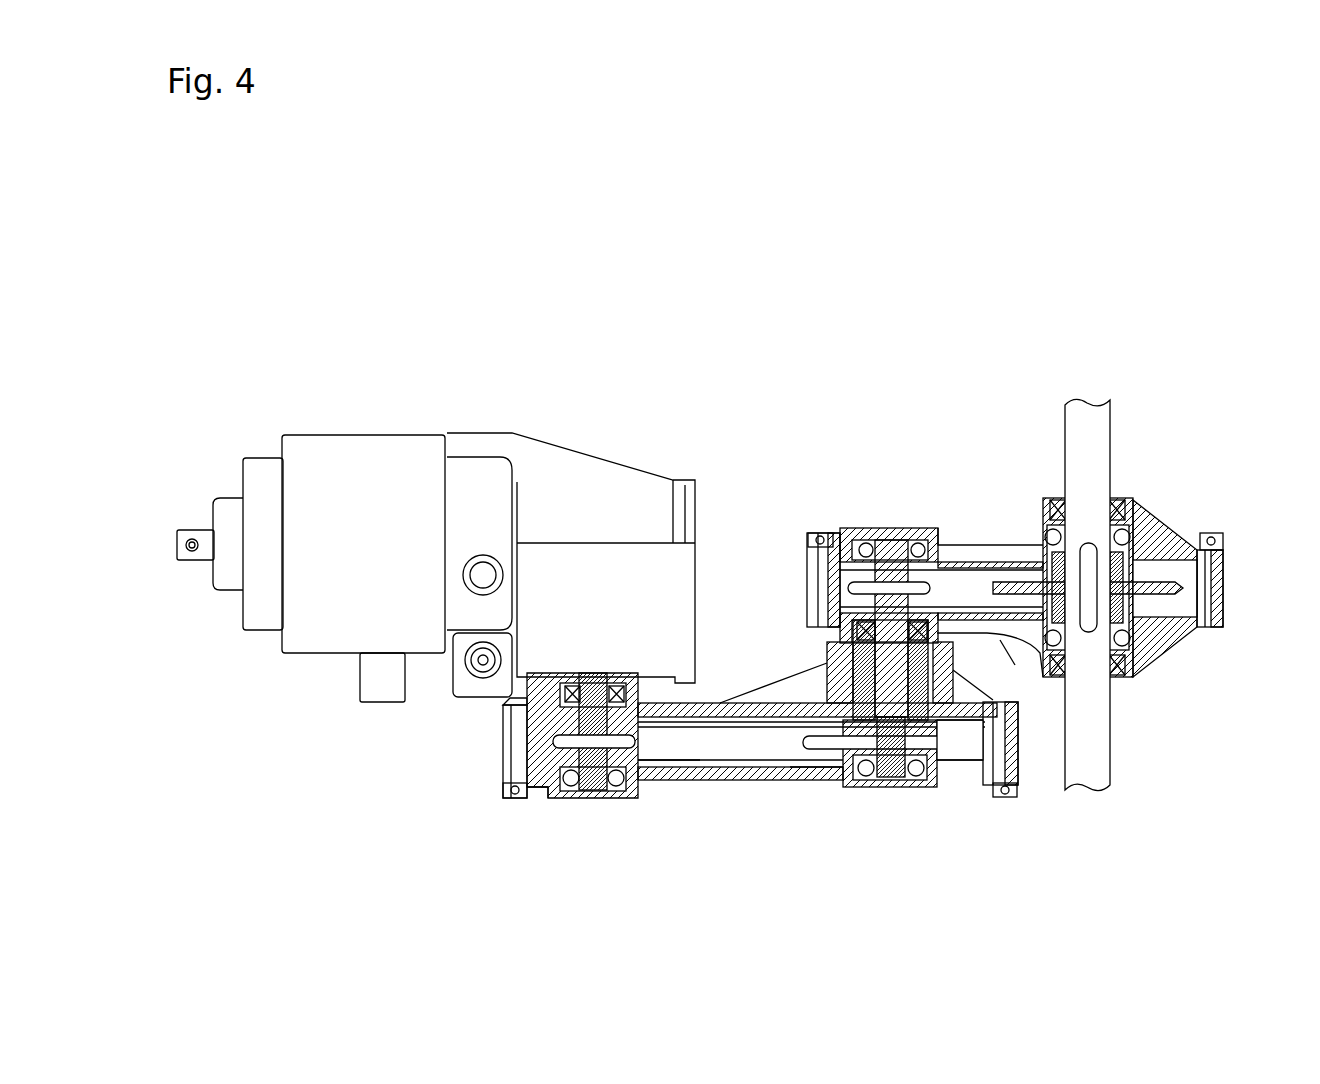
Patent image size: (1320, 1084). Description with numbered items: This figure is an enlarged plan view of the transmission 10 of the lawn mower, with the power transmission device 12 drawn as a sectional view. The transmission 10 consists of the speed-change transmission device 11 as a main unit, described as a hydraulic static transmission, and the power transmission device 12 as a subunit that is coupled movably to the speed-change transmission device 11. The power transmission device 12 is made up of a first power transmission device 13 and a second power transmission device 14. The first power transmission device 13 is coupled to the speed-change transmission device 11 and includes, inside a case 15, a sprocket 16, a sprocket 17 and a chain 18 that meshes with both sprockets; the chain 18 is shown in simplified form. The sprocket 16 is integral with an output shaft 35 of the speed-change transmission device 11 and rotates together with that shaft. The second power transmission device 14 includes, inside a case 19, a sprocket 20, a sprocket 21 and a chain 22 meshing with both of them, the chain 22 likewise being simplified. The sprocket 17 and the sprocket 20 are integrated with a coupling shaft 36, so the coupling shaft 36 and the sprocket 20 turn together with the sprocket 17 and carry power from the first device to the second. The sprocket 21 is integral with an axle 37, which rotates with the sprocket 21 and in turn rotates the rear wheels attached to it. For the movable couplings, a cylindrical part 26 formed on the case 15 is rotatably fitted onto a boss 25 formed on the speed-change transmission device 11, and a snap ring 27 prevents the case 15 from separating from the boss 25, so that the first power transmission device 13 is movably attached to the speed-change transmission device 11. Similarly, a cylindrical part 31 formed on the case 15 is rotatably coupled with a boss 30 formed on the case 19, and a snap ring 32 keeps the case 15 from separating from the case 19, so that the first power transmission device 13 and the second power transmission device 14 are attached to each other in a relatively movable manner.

The transmission 10 is at (794, 396).
The speed-change transmission device 11 is at (365, 435).
The power transmission device 12 is at (905, 322).
The first power transmission device 13 is at (734, 648).
The second power transmission device 14 is at (986, 496).
The case 15 is at (722, 775).
The sprocket 16 is at (558, 797).
The sprocket 17 is at (813, 778).
The chain 18 is at (665, 762).
The case 19 is at (1003, 548).
The sprocket 20 is at (850, 527).
The sprocket 21 is at (1153, 577).
The chain 22 is at (1015, 665).
The boss 25 is at (505, 787).
The cylindrical part 26 is at (507, 700).
The snap ring 27 is at (508, 727).
The boss 30 is at (943, 785).
The cylindrical part 31 is at (983, 778).
The snap ring 32 is at (847, 785).
The output shaft 35 is at (524, 793).
The coupling shaft 36 is at (890, 745).
The axle 37 is at (1117, 757).